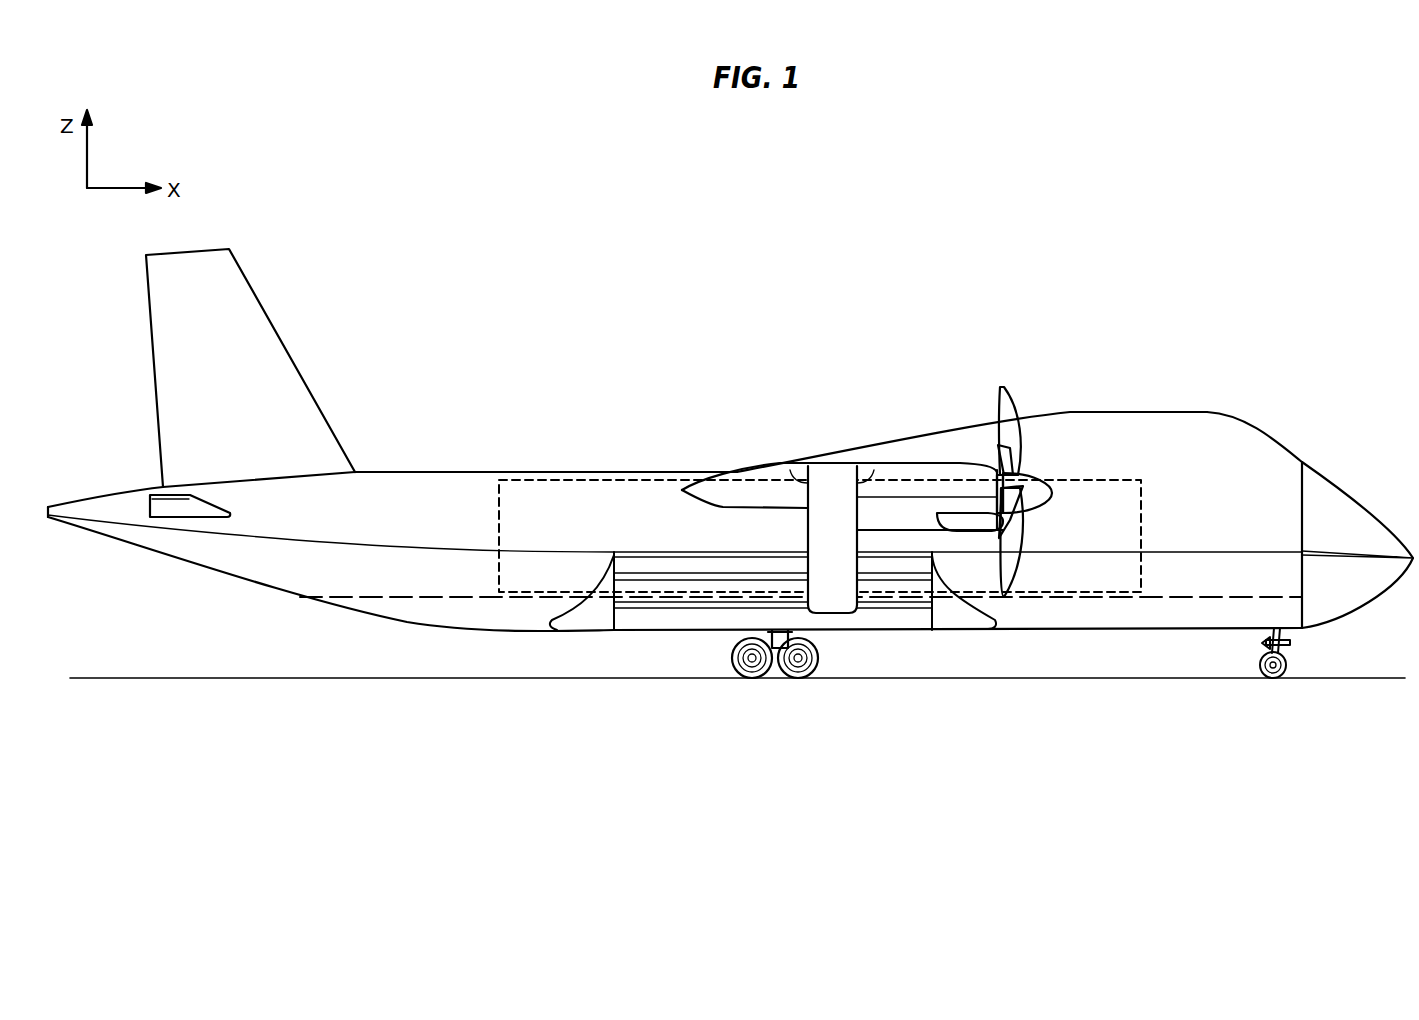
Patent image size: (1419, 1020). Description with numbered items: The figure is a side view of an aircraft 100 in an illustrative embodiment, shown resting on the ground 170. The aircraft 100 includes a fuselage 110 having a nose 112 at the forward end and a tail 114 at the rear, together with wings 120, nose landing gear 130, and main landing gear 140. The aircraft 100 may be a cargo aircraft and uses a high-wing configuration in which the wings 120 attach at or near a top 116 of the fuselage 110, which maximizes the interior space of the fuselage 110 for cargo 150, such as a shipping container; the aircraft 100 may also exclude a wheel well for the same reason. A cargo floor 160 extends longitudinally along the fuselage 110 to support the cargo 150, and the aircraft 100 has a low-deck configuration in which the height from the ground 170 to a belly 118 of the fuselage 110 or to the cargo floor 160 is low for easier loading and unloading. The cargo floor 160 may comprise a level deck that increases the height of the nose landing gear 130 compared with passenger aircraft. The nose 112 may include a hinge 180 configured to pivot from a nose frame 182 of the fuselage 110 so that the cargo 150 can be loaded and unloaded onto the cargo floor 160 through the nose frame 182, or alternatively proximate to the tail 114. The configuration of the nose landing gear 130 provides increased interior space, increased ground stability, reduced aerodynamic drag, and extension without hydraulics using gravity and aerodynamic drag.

The aircraft 100 is at (527, 191).
The fuselage 110 is at (470, 480).
The nose 112 is at (1372, 603).
The tail 114 is at (273, 363).
The top of the fuselage 116 is at (648, 470).
The belly of the fuselage 118 is at (620, 633).
The wings 120 is at (757, 467).
The nose landing gear 130 is at (1252, 687).
The main landing gear 140 is at (769, 689).
The cargo 150 is at (1070, 479).
The cargo floor 160 is at (395, 597).
The ground 170 is at (462, 678).
The hinge 180 is at (1302, 462).
The nose frame 182 is at (1303, 487).